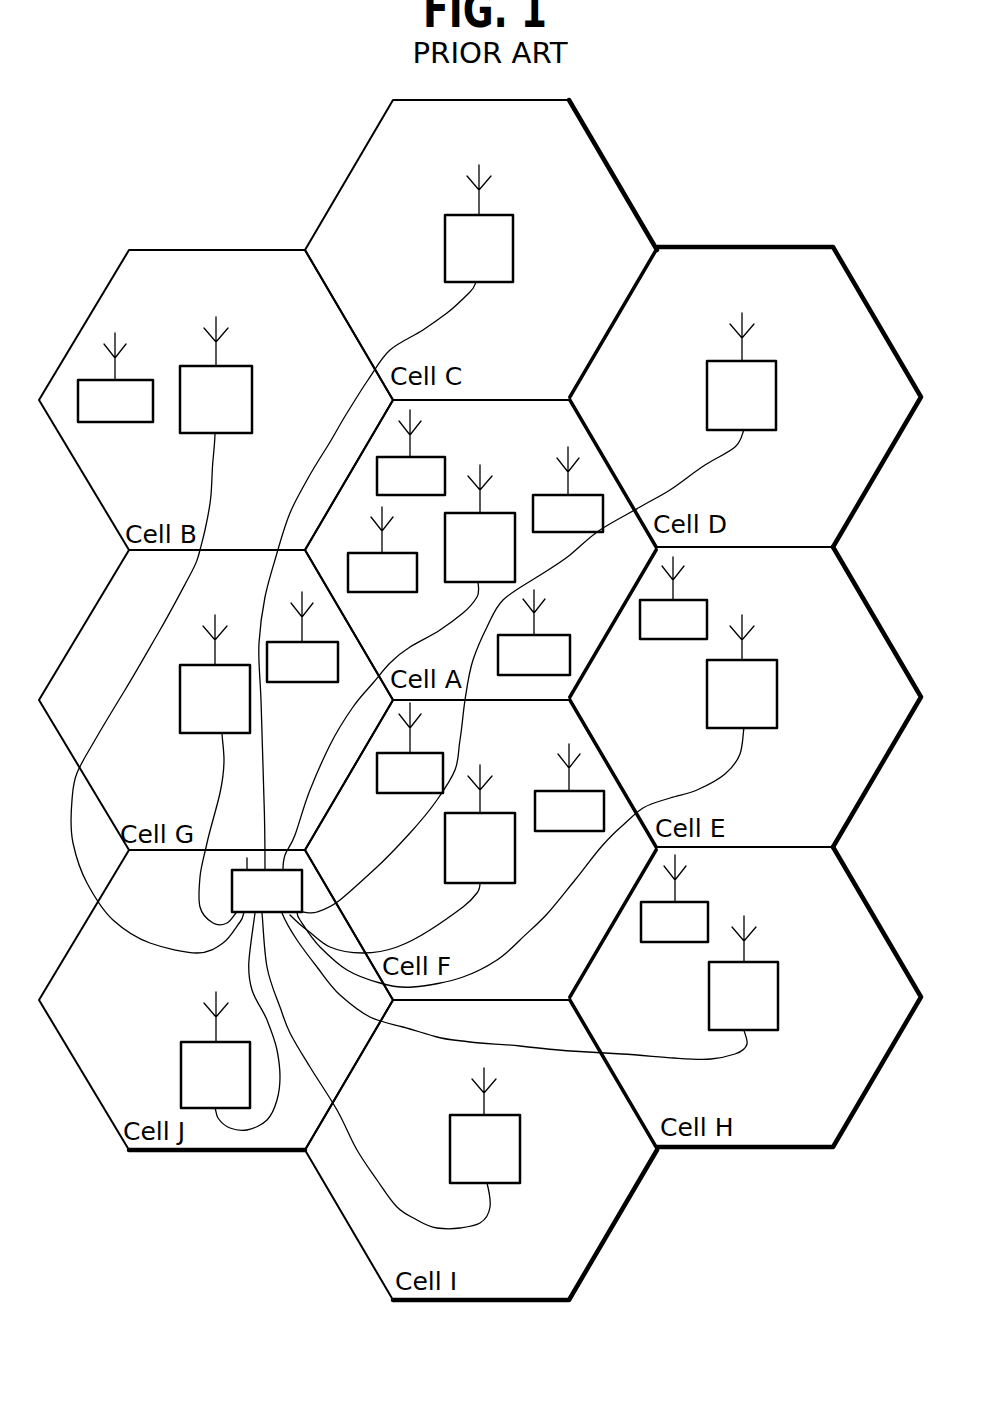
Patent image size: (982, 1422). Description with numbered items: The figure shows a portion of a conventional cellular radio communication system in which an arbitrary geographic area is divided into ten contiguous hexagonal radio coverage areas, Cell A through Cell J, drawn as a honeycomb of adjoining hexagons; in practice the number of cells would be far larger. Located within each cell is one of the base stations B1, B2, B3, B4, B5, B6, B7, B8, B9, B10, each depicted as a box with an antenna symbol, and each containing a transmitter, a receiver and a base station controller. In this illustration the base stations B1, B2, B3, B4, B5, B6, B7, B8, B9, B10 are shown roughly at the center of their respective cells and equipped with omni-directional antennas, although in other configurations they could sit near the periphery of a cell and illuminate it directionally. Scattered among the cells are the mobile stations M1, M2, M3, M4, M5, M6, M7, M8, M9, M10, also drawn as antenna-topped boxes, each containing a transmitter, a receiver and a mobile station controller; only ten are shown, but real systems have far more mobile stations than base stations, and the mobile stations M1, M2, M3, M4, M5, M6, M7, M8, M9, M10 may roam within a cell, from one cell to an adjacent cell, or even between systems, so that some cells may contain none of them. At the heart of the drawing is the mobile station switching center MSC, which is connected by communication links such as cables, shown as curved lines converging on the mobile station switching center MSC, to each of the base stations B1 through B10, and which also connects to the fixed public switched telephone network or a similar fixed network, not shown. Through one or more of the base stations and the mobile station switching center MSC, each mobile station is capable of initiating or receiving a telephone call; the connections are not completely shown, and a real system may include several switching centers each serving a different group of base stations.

The mobile station switching center MSC is at (267, 885).
The base station B1 is at (399, 667).
The base station B2 is at (539, 613).
The base station B3 is at (537, 801).
The base station B4 is at (402, 859).
The base station B5 is at (215, 770).
The base station B6 is at (161, 635).
The base station B7 is at (386, 517).
The base station B8 is at (530, 986).
The base station B9 is at (391, 1071).
The base station B10 is at (230, 1021).
The mobile station M1 is at (674, 898).
The mobile station M2 is at (302, 637).
The mobile station M3 is at (382, 549).
The mobile station M4 is at (568, 489).
The mobile station M5 is at (673, 598).
The mobile station M6 is at (411, 452).
The mobile station M7 is at (534, 632).
The mobile station M8 is at (569, 787).
The mobile station M9 is at (410, 748).
The mobile station M10 is at (115, 377).